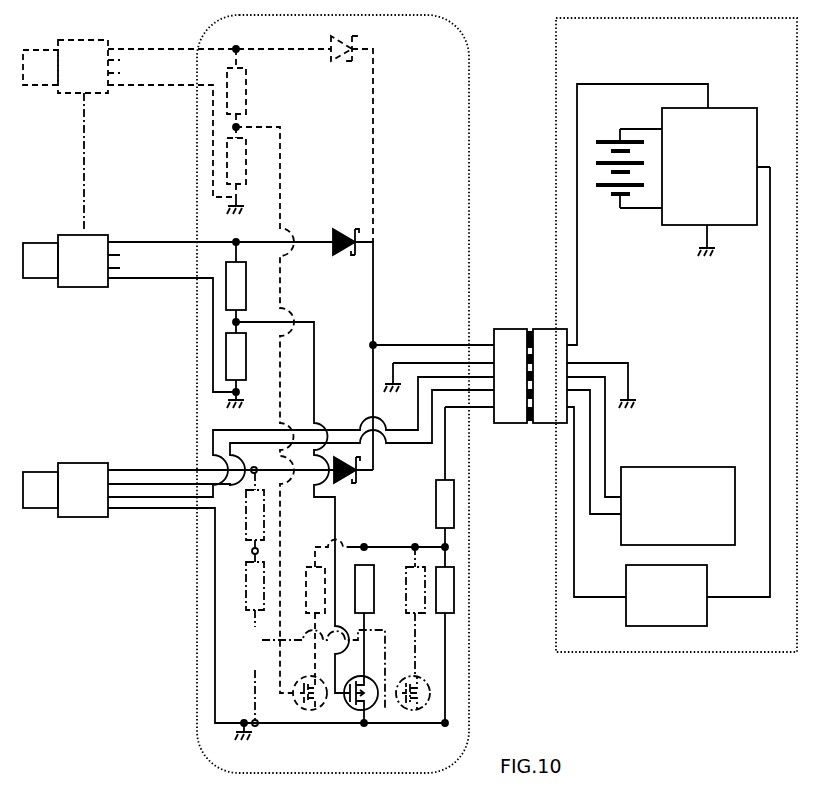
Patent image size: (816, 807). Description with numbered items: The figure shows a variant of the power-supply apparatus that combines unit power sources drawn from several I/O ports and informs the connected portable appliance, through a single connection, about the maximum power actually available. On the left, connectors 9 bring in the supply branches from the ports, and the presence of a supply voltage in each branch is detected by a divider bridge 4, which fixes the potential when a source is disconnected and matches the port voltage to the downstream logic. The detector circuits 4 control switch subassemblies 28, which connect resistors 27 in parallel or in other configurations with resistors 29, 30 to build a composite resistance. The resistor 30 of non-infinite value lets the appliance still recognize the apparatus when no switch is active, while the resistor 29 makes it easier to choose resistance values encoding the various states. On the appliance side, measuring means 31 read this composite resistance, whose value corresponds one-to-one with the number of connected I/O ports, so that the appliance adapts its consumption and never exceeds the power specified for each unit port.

The divider bridge 4 is at (257, 125).
The connector 9 is at (78, 518).
The resistor 27 is at (301, 575).
The switch subassemblies 28 is at (402, 712).
The resistor 29 is at (454, 509).
The resistor 30 is at (454, 590).
The means for measuring the value of a resistance 31 is at (707, 612).